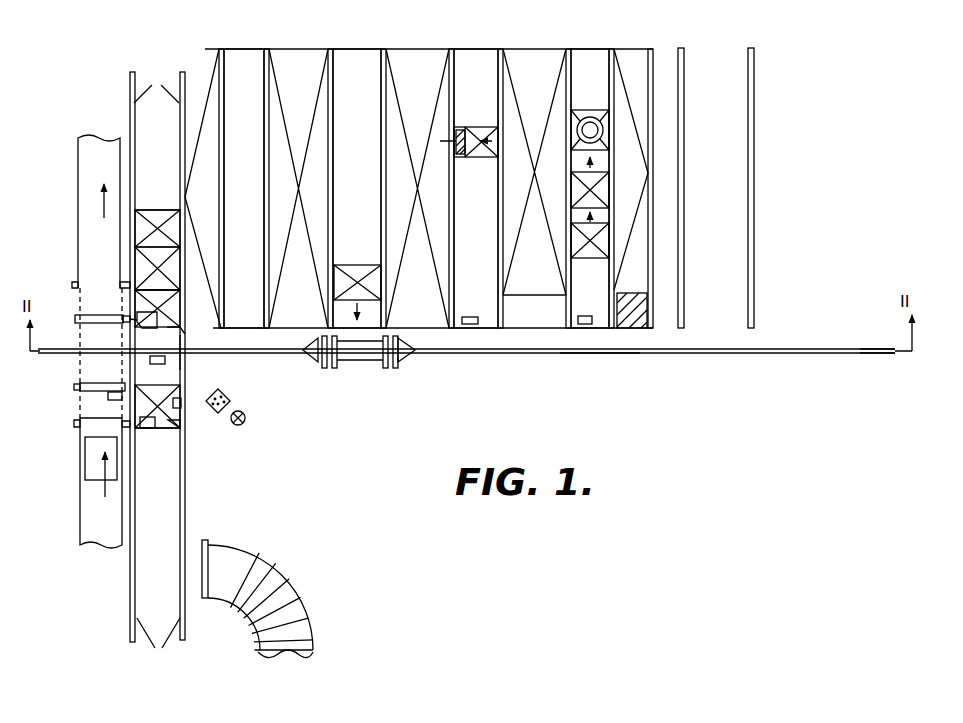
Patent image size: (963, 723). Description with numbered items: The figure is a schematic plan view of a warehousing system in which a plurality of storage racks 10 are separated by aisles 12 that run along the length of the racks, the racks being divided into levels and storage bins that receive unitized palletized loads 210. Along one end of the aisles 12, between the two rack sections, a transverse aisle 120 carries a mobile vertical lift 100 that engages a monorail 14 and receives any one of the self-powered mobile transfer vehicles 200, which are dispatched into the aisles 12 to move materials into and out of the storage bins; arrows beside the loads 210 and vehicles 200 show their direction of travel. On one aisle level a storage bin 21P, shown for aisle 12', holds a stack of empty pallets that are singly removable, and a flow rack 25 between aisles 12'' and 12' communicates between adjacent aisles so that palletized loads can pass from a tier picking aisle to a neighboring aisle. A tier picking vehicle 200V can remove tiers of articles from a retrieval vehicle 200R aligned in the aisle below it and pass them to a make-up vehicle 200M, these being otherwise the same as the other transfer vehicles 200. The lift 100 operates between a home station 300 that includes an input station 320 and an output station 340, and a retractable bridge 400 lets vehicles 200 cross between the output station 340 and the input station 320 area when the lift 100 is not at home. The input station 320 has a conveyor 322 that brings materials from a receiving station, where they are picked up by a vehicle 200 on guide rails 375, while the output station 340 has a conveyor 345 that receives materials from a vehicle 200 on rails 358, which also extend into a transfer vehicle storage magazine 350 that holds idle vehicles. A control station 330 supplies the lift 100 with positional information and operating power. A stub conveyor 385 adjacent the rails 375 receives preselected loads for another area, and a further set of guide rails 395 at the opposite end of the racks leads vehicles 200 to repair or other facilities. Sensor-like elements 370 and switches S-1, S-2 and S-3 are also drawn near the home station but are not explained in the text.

The storage racks 10 is at (197, 62).
The aisles 12 is at (302, 174).
The aisle 12'' is at (478, 174).
The aisle 12' is at (590, 174).
The monorail 14 is at (865, 353).
The flow rack 25 is at (518, 300).
The storage bin 21P is at (633, 330).
The mobile vertical lift 100 is at (414, 347).
The transverse aisle 120 is at (614, 359).
The mobile transfer vehicles 200 is at (153, 209).
The tier picking vehicle 200V is at (580, 108).
The retrieval vehicle 200R is at (604, 172).
The make-up vehicle 200M is at (600, 256).
The palletized loads 210 is at (86, 461).
The home station 300 is at (202, 363).
The input station 320 is at (197, 424).
The conveyor 322 is at (85, 508).
The control station 330 is at (234, 402).
The output station 340 is at (188, 298).
The conveyor 345 is at (78, 167).
The transfer vehicle storage magazine 350 is at (188, 262).
The rails 358 is at (156, 85).
The sensor 370 is at (134, 318).
The guide rails 375 is at (158, 643).
The stub conveyor 385 is at (296, 660).
The guide rails 395 is at (714, 58).
The retractable bridge 400 is at (188, 345).
The switch S-1 is at (108, 396).
The switch S-2 is at (181, 405).
The switch S-3 is at (150, 360).